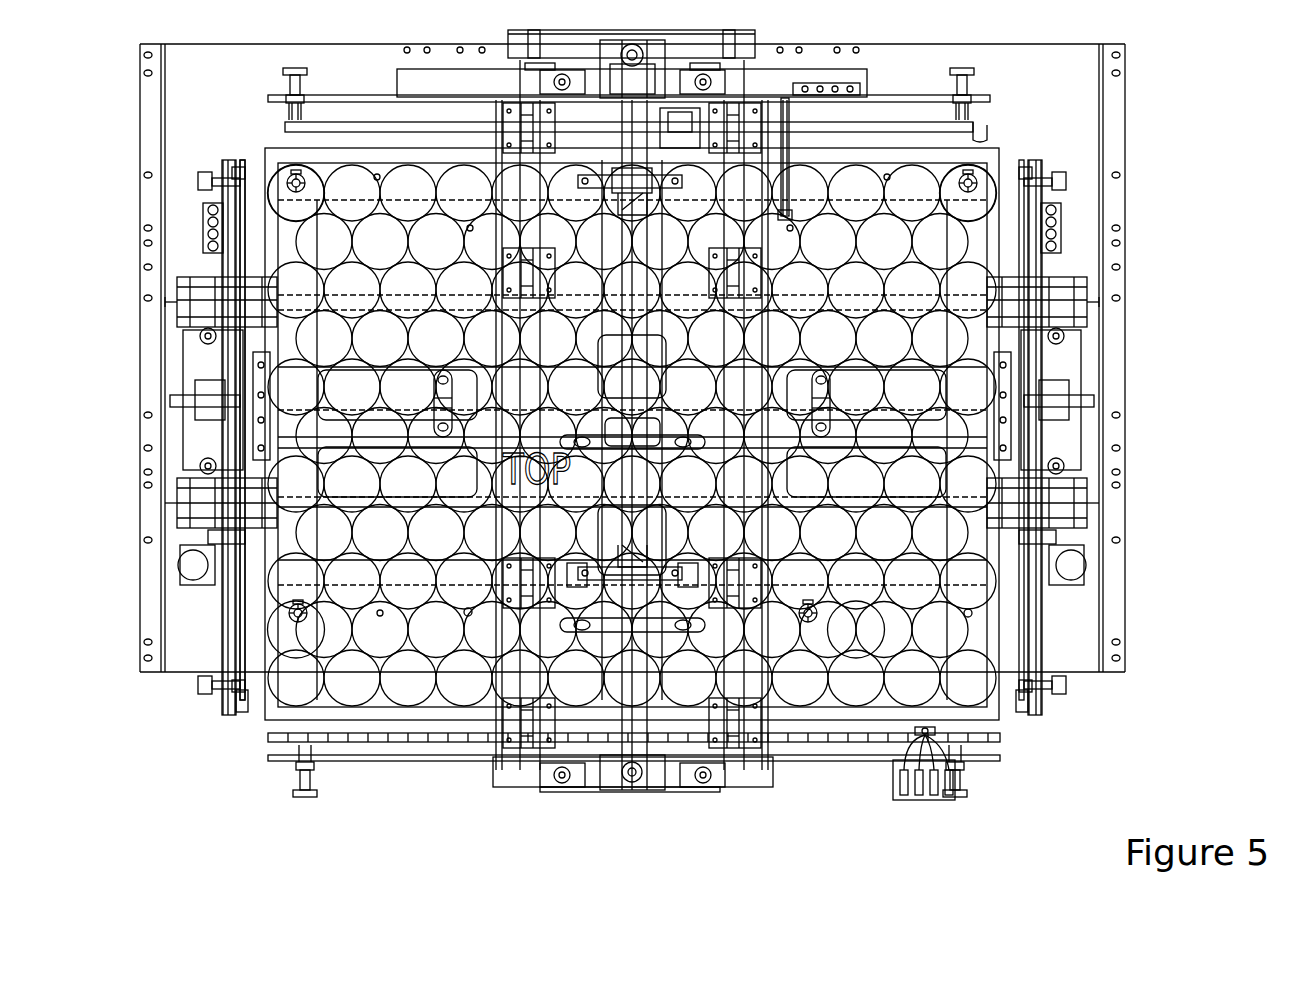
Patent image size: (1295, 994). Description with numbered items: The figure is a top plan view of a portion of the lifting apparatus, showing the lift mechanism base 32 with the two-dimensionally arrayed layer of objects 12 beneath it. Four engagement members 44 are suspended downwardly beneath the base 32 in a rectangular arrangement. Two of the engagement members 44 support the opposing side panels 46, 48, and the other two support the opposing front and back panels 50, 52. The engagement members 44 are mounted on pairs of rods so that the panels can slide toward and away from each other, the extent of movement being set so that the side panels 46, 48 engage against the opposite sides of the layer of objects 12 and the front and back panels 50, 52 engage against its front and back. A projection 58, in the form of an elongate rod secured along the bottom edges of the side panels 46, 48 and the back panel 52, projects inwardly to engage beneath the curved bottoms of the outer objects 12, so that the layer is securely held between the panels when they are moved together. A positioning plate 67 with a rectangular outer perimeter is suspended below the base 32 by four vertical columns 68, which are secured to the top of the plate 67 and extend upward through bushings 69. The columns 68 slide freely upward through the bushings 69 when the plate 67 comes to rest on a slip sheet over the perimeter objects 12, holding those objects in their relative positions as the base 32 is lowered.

The objects 12 is at (378, 172).
The lift mechanism base 32 is at (783, 215).
The engagement members 44 is at (335, 97).
The side panel 46 is at (1024, 677).
The side panel 48 is at (237, 677).
The front panel 50 is at (360, 727).
The back panel 52 is at (975, 136).
The projection 58 is at (282, 128).
The positioning plate 67 is at (941, 170).
The vertical columns 68 is at (283, 172).
The bushings 69 is at (284, 199).